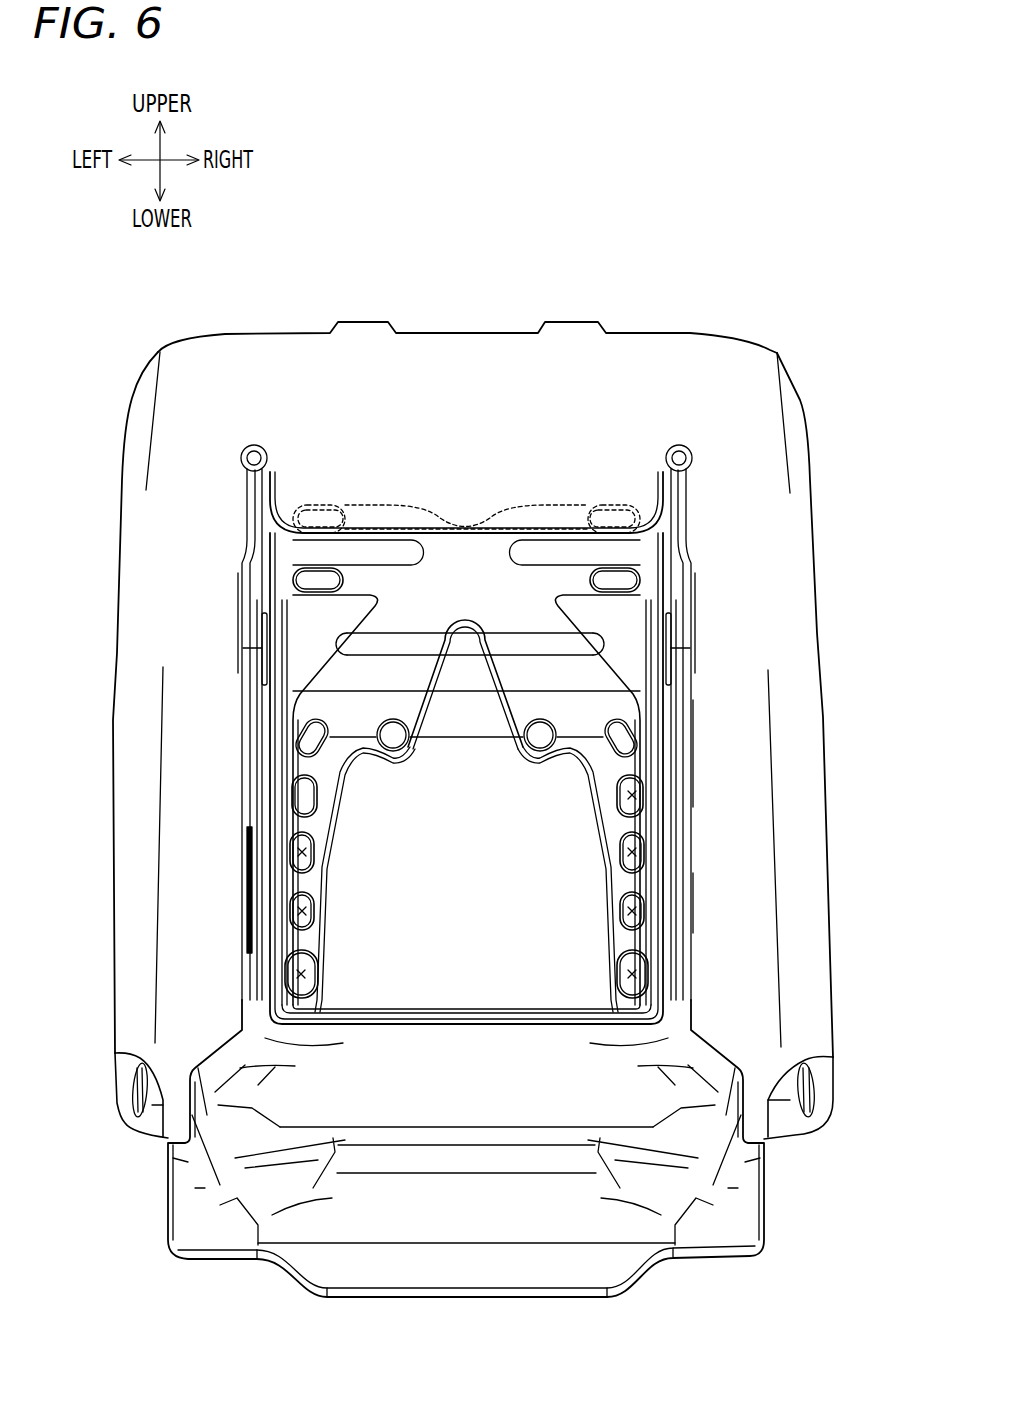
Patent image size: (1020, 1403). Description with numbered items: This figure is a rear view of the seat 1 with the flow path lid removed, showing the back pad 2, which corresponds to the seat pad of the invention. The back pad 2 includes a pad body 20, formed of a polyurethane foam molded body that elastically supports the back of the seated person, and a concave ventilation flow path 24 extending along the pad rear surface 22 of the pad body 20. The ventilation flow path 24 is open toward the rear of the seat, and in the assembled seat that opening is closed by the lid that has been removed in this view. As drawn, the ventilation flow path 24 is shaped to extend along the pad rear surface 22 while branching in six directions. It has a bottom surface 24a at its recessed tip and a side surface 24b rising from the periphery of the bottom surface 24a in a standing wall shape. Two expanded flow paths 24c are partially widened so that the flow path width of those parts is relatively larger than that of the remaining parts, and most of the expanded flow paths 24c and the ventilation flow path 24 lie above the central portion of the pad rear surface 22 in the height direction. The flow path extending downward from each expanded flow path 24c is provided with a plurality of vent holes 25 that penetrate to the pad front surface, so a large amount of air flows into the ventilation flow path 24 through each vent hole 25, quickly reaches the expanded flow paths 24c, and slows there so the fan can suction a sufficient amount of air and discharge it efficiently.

The vehicle seat 1 is at (661, 180).
The back pad 2 is at (688, 330).
The pad body 20 is at (487, 352).
The pad rear surface 22 is at (487, 990).
The ventilation flow path 24 is at (462, 578).
The bottom surface 24a is at (370, 580).
The side surface 24b is at (320, 582).
The expanded flow path 24c is at (548, 707).
The vent hole 25 is at (300, 970).